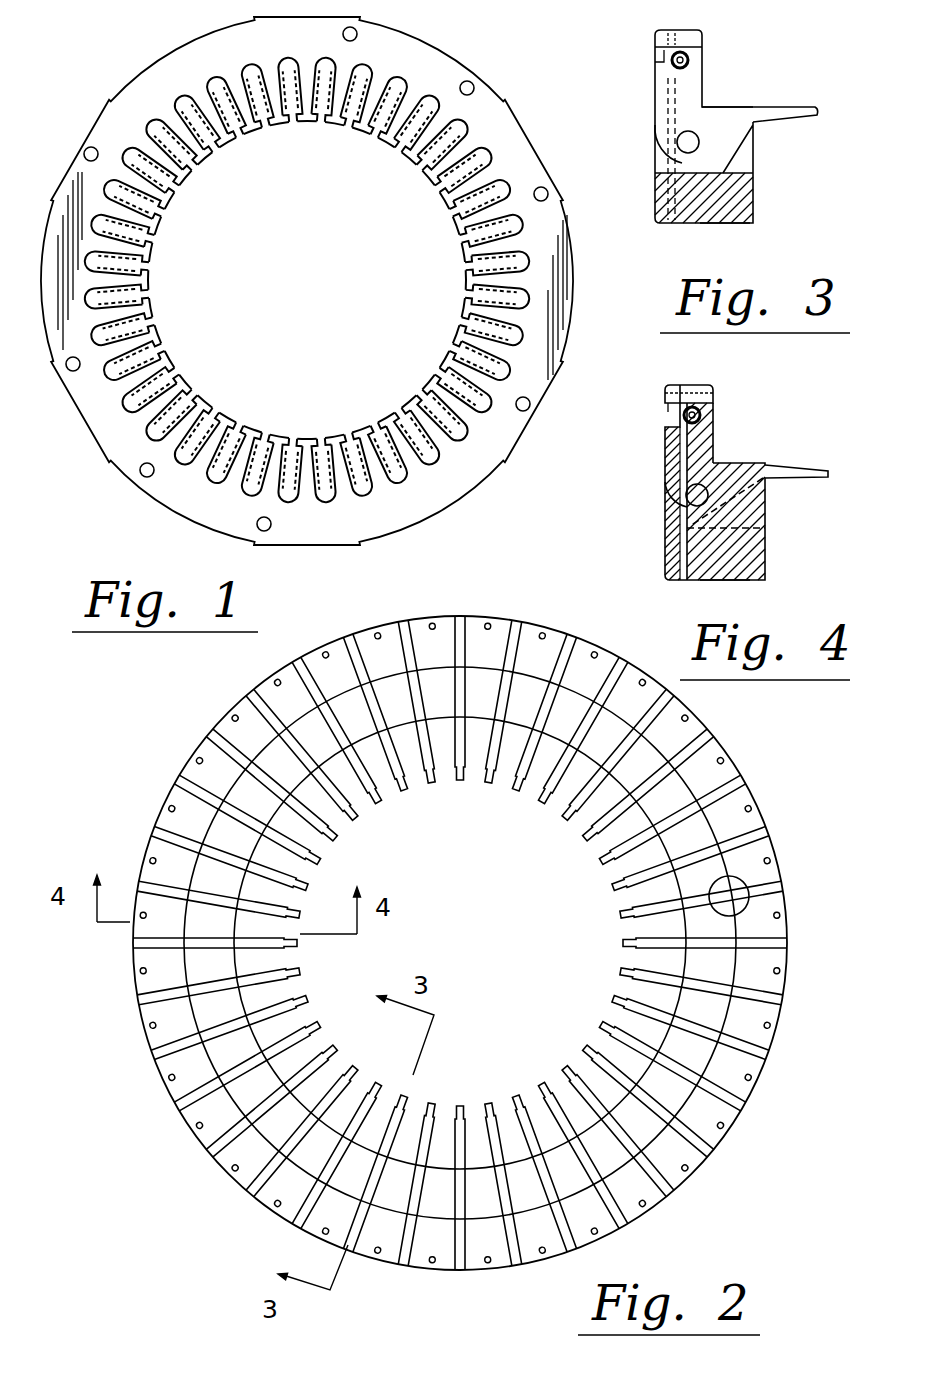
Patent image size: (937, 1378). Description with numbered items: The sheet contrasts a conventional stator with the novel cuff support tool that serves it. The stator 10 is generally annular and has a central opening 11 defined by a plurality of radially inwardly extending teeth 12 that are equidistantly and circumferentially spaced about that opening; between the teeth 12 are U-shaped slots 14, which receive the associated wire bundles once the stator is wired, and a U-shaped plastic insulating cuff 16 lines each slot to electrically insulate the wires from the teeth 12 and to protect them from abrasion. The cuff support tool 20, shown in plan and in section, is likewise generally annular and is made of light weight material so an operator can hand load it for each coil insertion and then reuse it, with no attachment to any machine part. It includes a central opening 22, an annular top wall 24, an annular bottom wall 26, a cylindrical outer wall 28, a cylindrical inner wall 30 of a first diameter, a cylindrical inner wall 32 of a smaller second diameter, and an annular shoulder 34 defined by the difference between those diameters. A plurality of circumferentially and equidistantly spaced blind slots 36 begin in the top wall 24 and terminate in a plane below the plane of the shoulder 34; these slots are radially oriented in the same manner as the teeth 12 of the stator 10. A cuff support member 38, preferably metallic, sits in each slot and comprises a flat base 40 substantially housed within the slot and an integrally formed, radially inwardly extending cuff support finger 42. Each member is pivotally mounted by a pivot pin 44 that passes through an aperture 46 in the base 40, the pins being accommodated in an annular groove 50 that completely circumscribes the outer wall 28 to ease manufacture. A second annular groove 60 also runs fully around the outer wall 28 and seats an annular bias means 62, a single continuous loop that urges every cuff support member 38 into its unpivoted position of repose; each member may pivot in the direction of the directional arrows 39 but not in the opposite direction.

In FIG. 1, the stator 10 is at (484, 46).
In FIG. 1, the central opening 11 is at (323, 333).
In FIG. 1, the teeth 12 is at (398, 435).
In FIG. 1, the U-shaped slots 14 is at (456, 248).
In FIG. 1, the insulating cuff 16 is at (207, 105).
In FIG. 2, the cuff support tool 20 is at (172, 752).
In FIG. 2, the central opening 22 is at (540, 937).
In FIG. 2, the annular top wall 24 is at (497, 632).
In FIG. 3, the annular top wall 24 is at (680, 28).
In FIG. 4, the annular top wall 24 is at (693, 385).
In FIG. 3, the annular bottom wall 26 is at (713, 225).
In FIG. 4, the annular bottom wall 26 is at (720, 578).
In FIG. 2, the cylindrical outer wall 28 is at (750, 808).
In FIG. 3, the cylindrical outer wall 28 is at (657, 197).
In FIG. 4, the cylindrical outer wall 28 is at (665, 463).
In FIG. 2, the cylindrical inner wall 30 is at (745, 865).
In FIG. 4, the cylindrical inner wall 30 is at (713, 418).
In FIG. 2, the cylindrical inner wall 32 is at (612, 869).
In FIG. 3, the cylindrical inner wall 32 is at (753, 200).
In FIG. 4, the cylindrical inner wall 32 is at (765, 557).
In FIG. 2, the annular shoulder 34 is at (675, 1050).
In FIG. 3, the annular shoulder 34 is at (720, 107).
In FIG. 4, the annular shoulder 34 is at (730, 462).
In FIG. 2, the blind slots 36 is at (458, 625).
In FIG. 3, the blind slots 36 is at (772, 160).
In FIG. 2, the cuff support member 38 is at (355, 640).
In FIG. 3, the cuff support member 38 is at (740, 143).
In FIG. 3, the directional arrows 39 is at (803, 50).
In FIG. 4, the directional arrows 39 is at (811, 404).
In FIG. 2, the flat base 40 is at (268, 718).
In FIG. 3, the flat base 40 is at (697, 82).
In FIG. 2, the cuff support finger 42 is at (481, 759).
In FIG. 3, the cuff support finger 42 is at (800, 110).
In FIG. 4, the cuff support finger 42 is at (796, 471).
In FIG. 3, the pivot pin 44 is at (678, 137).
In FIG. 4, the pivot pin 44 is at (693, 495).
In FIG. 3, the aperture 46 is at (668, 158).
In FIG. 4, the annular groove 50 is at (665, 493).
In FIG. 3, the second annular groove 60 is at (666, 47).
In FIG. 4, the second annular groove 60 is at (668, 403).
In FIG. 3, the annular bias means 62 is at (688, 57).
In FIG. 4, the annular bias means 62 is at (702, 405).